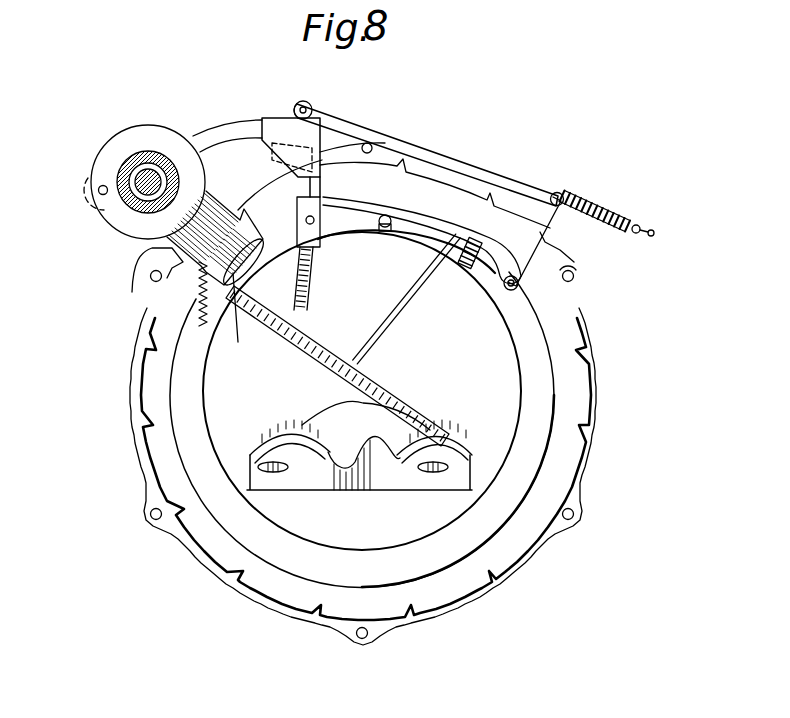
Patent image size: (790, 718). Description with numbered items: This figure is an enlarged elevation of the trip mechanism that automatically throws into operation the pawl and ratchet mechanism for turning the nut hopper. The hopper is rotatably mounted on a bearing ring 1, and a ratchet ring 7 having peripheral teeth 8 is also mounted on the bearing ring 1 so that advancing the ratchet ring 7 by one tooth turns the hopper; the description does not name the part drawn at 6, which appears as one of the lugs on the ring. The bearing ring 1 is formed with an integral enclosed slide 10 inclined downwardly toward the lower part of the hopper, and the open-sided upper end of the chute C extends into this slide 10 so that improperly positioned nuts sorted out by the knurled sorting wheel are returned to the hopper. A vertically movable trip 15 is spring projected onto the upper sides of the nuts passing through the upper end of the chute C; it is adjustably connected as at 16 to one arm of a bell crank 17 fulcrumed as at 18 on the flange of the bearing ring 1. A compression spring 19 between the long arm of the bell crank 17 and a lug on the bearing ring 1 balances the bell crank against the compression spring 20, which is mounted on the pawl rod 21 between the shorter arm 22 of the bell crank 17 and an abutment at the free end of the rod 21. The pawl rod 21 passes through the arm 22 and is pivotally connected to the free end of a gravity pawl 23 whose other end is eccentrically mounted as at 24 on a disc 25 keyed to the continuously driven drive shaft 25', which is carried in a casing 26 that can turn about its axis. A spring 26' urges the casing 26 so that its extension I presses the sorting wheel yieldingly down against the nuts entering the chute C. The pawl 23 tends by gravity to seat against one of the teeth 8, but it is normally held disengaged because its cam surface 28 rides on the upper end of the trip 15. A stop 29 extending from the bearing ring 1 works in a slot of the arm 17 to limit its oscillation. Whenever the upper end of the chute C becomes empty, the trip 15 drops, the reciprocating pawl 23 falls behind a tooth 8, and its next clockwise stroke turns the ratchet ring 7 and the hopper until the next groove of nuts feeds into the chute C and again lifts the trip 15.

The bearing ring 1 is at (530, 332).
The mounting lug 6 is at (570, 502).
The ratchet ring 7 is at (563, 382).
The peripheral teeth 8 is at (580, 337).
The enclosed slide 10 is at (387, 330).
The trip 15 is at (310, 288).
The adjustable connection 16 is at (327, 237).
The bell crank 17 is at (490, 264).
The fulcrum 18 is at (507, 292).
The compression spring 19 is at (462, 266).
The compression spring 20 is at (593, 225).
The pawl rod 21 is at (487, 173).
The shorter arm 22 is at (545, 228).
The gravity pawl 23 is at (280, 125).
The eccentric mounting 24 is at (100, 195).
The disc 25 is at (170, 205).
The drive shaft 25' is at (99, 223).
The casing 26 is at (171, 138).
The spring 26' is at (178, 294).
The cam surface 28 is at (323, 158).
The stop 29 is at (390, 215).
The extension I is at (235, 317).
The chute C is at (307, 340).